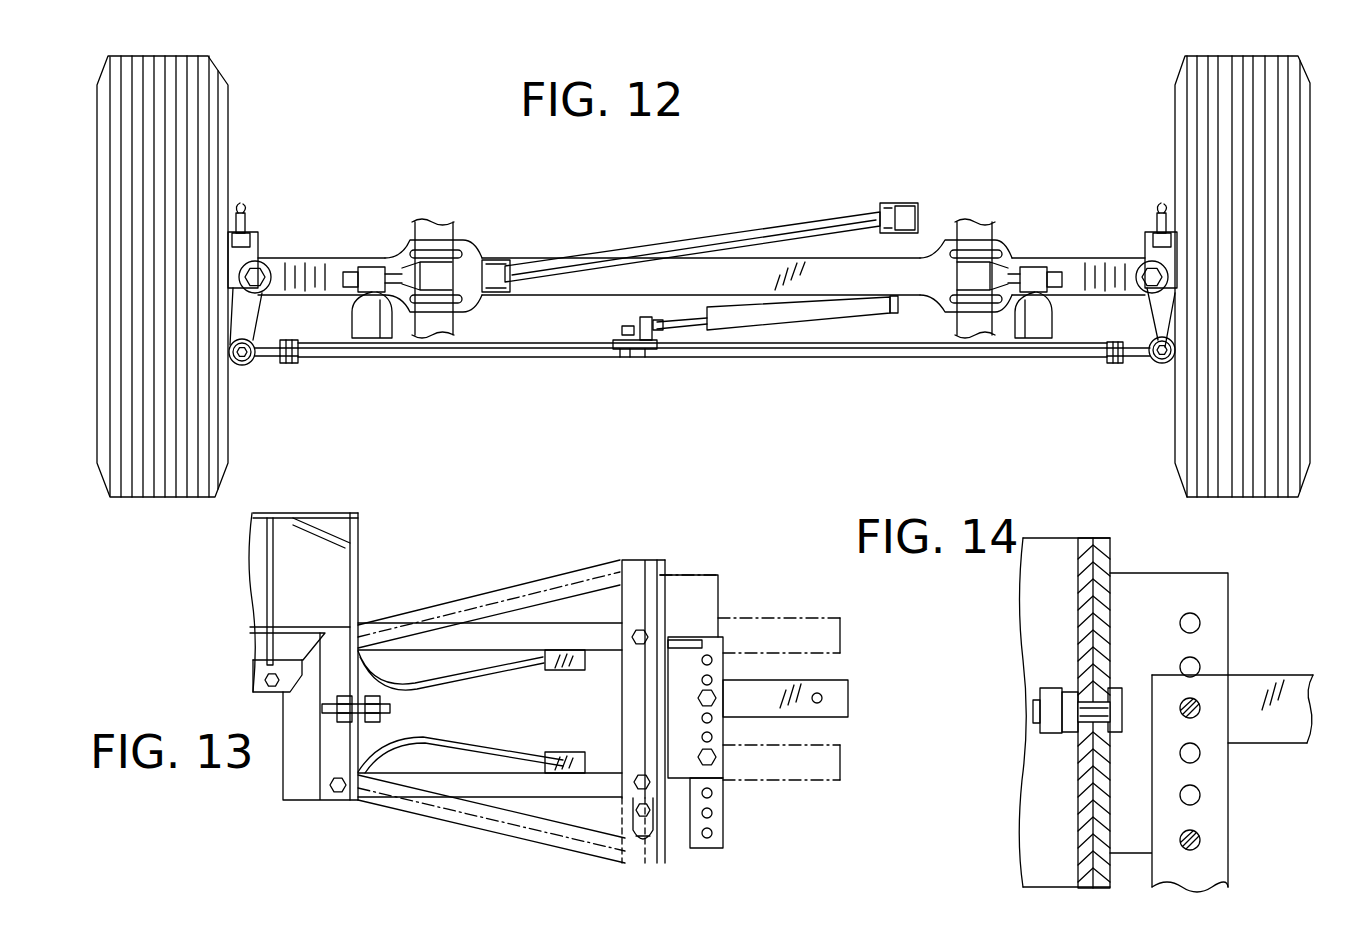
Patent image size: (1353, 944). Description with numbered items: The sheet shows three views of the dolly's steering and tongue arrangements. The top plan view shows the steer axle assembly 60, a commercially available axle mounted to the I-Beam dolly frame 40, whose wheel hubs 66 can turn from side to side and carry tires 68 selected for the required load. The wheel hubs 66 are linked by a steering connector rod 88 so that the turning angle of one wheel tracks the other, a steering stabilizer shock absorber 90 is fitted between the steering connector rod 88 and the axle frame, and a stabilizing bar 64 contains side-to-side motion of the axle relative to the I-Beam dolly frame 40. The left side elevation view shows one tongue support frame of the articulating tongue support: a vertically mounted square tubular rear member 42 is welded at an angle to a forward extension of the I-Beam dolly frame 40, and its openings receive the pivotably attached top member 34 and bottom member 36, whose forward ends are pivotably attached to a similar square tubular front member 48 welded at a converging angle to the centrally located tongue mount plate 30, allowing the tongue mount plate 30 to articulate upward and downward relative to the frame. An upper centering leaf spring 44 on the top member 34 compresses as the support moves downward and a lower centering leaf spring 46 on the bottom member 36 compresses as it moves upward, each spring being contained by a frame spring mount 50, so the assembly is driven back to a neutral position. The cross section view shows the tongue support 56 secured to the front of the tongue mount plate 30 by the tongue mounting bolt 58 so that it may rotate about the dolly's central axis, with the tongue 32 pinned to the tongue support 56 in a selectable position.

In FIG. 12, the tires 68 is at (233, 110).
In FIG. 12, the wheel hubs 66 is at (260, 260).
In FIG. 12, the steer axle assembly 60 is at (328, 257).
In FIG. 12, the stabilizing bar 64 is at (725, 243).
In FIG. 12, the steering connector rod 88 is at (493, 356).
In FIG. 12, the steering stabilizer shock absorber 90 is at (758, 318).
In FIG. 13, the I-Beam dolly frame 40 is at (283, 513).
In FIG. 13, the rear member 42 is at (362, 528).
In FIG. 13, the top member 34 is at (530, 592).
In FIG. 13, the upper centering leaf spring 44 is at (437, 670).
In FIG. 13, the lower centering leaf spring 46 is at (428, 740).
In FIG. 13, the bottom member 36 is at (490, 790).
In FIG. 13, the frame spring mount 50 is at (572, 672).
In FIG. 13, the front member 48 is at (633, 752).
In FIG. 13, the tongue mount plate 30 is at (693, 607).
In FIG. 14, the tongue mount plate 30 is at (1085, 538).
In FIG. 13, the tongue support 56 is at (718, 620).
In FIG. 14, the tongue support 56 is at (1117, 592).
In FIG. 13, the tongue 32 is at (797, 707).
In FIG. 14, the tongue 32 is at (1273, 733).
In FIG. 14, the tongue mounting bolt 58 is at (1040, 700).